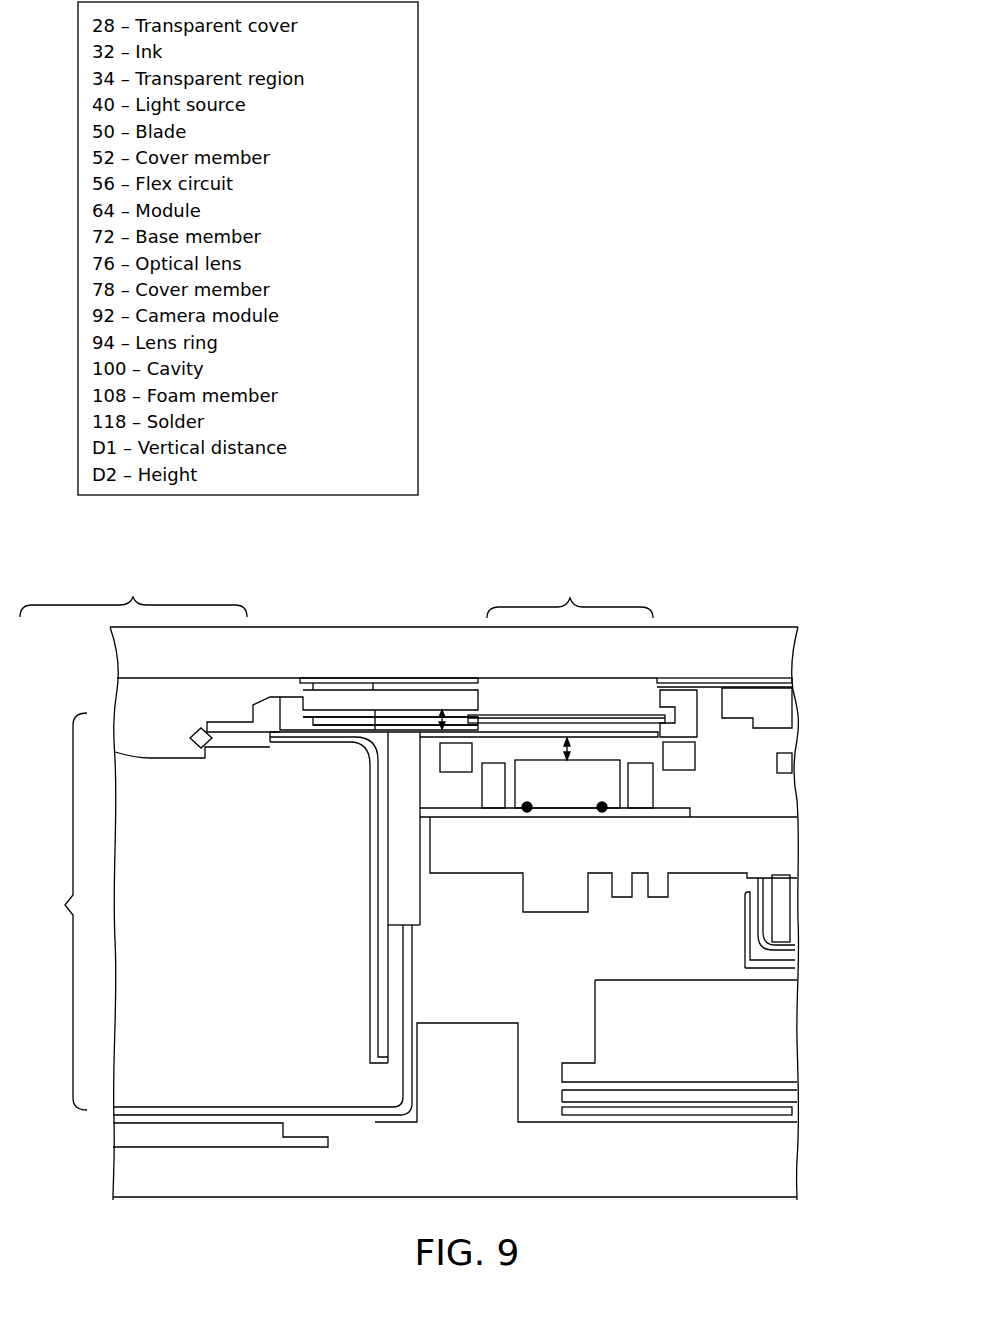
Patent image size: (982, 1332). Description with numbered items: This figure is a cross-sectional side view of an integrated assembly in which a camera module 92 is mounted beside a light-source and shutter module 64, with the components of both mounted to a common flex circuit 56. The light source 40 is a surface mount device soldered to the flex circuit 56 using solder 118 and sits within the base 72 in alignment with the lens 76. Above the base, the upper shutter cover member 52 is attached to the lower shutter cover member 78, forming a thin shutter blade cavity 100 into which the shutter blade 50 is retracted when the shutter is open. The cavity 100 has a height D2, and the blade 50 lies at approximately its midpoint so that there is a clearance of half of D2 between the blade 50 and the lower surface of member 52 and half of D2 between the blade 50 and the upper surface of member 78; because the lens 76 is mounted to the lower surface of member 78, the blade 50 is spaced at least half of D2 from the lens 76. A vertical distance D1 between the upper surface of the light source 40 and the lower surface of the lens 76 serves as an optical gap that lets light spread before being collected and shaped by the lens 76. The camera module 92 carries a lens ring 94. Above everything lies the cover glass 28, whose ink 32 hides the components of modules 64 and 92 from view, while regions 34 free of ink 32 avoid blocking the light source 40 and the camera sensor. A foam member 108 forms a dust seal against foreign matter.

The cover glass 28 is at (768, 633).
The ink 32 is at (337, 678).
The regions free of ink 34 is at (336, 589).
The light source 40 is at (605, 785).
The shutter blade 50 is at (505, 707).
The upper shutter cover member 52 is at (302, 700).
The flex circuit 56 is at (465, 813).
The light-source and shutter module 64 is at (412, 670).
The base 72 is at (500, 793).
The lens 76 is at (487, 737).
The lower shutter cover member 78 is at (360, 733).
The camera module 92 is at (59, 911).
The lens ring 94 is at (265, 705).
The shutter blade cavity 100 is at (390, 720).
The foam member 108 is at (197, 732).
The solder 118 is at (602, 807).
The vertical distance D1 is at (585, 750).
The height D2 is at (423, 720).